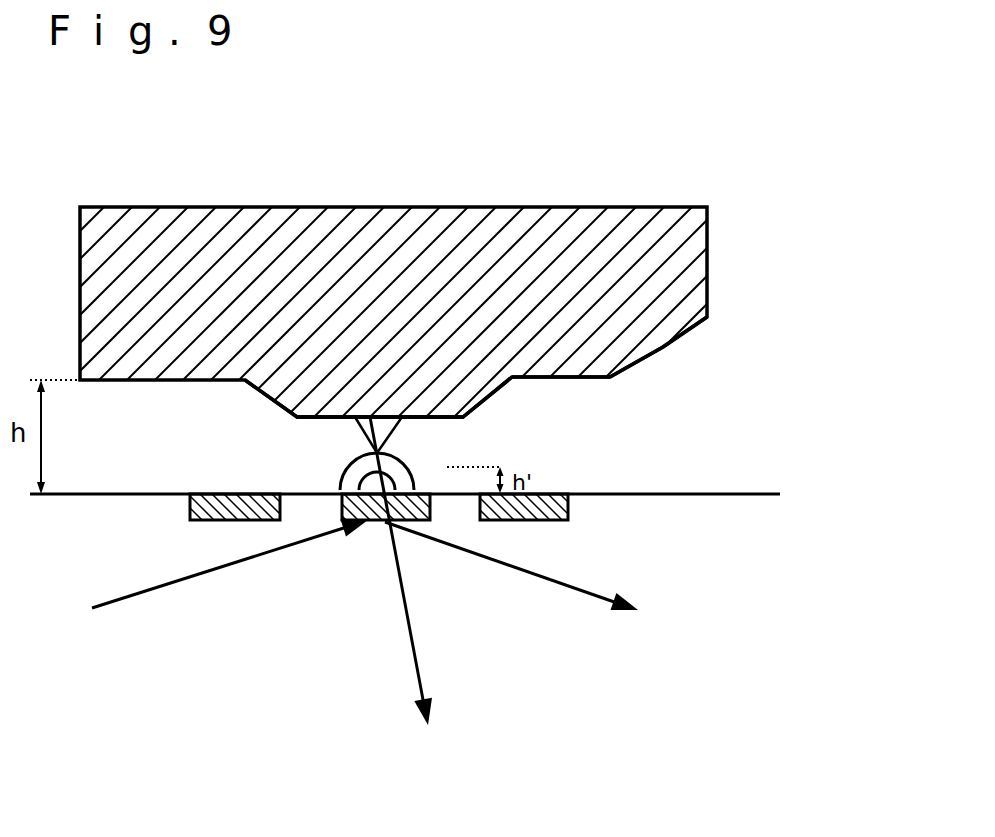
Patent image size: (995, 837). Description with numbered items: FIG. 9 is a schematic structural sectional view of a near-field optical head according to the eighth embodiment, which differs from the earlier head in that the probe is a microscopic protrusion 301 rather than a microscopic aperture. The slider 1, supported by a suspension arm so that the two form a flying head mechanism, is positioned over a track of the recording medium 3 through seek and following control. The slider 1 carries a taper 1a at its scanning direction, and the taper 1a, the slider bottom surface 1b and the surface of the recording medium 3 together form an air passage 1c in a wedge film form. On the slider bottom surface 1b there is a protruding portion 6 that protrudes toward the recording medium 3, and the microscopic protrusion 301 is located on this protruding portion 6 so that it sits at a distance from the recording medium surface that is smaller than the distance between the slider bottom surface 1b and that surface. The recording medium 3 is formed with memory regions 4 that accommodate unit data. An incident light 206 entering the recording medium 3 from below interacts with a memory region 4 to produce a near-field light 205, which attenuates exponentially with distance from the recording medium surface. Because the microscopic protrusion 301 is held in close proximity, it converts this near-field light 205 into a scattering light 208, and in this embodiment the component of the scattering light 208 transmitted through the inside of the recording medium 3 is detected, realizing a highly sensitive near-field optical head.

The slider 1 is at (613, 247).
The taper 1a is at (740, 323).
The slider bottom surface 1b is at (563, 377).
The air passage 1c is at (630, 401).
The protruding portion 6 is at (323, 398).
The microscopic protrusion 301 is at (370, 417).
The near-field light 205 is at (373, 485).
The recording medium 3 is at (405, 474).
The memory region 4 is at (553, 520).
The incident light 206 is at (199, 581).
The scattering light 208 is at (419, 590).